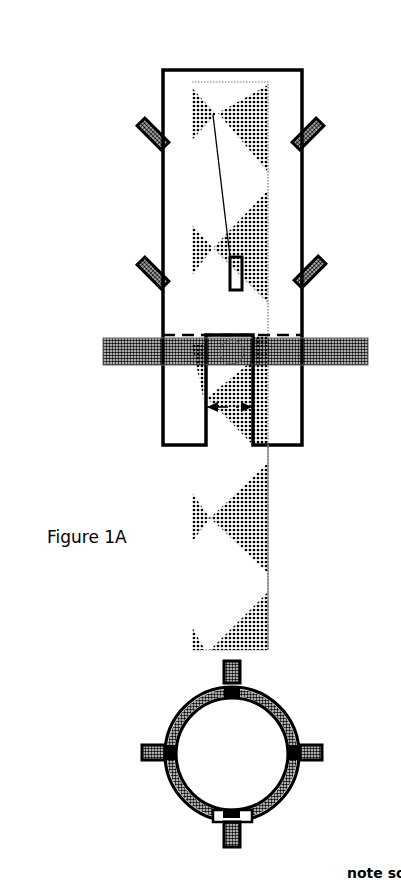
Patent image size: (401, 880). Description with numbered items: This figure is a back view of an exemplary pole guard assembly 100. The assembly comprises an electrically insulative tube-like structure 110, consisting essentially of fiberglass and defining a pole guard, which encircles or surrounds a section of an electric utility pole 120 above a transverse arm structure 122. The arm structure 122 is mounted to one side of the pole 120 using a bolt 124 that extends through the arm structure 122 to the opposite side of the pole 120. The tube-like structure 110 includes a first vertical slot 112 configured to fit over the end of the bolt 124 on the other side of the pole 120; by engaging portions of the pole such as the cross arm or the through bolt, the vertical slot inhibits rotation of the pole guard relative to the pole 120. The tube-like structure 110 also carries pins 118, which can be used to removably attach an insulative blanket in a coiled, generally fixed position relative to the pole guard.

The pole guard assembly 100 is at (111, 53).
The electrically insulative tube-like structure 110 is at (287, 707).
The first vertical slot 112 is at (272, 451).
The pins 118 is at (318, 250).
The electric utility pole 120 is at (199, 367).
The transverse arm structure 122 is at (224, 360).
The bolt 124 is at (303, 320).